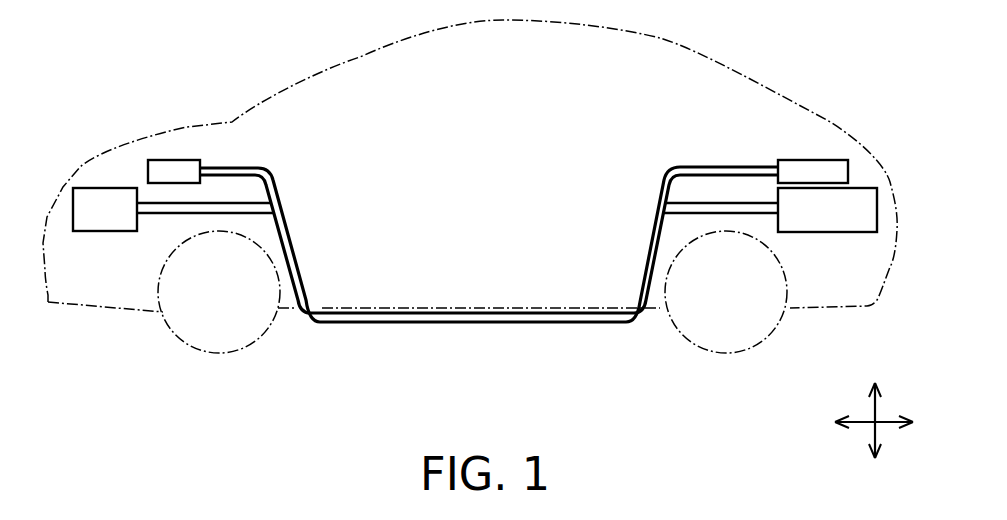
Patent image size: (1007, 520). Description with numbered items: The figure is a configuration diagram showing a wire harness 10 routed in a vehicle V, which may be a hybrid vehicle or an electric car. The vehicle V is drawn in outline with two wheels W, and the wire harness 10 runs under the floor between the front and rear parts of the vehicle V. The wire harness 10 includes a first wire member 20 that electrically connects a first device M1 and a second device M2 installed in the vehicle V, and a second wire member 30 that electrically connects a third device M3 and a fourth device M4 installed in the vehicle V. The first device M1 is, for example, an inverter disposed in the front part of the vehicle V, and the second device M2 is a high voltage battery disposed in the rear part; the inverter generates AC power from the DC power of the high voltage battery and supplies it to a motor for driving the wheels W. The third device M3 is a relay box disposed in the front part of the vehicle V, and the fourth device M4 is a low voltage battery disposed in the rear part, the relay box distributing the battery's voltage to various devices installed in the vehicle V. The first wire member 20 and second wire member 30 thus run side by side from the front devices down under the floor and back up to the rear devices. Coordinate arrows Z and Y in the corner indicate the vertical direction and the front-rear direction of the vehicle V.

The vehicle V is at (733, 63).
The wheels W is at (219, 353).
The wire harness 10 is at (457, 217).
The first wire member 20 is at (700, 203).
The second wire member 30 is at (733, 166).
The first device M1 is at (113, 231).
The second device M2 is at (845, 232).
The third device M3 is at (170, 160).
The fourth device M4 is at (826, 160).
The vertical direction axis Z is at (875, 403).
The front-rear direction axis Y is at (884, 422).